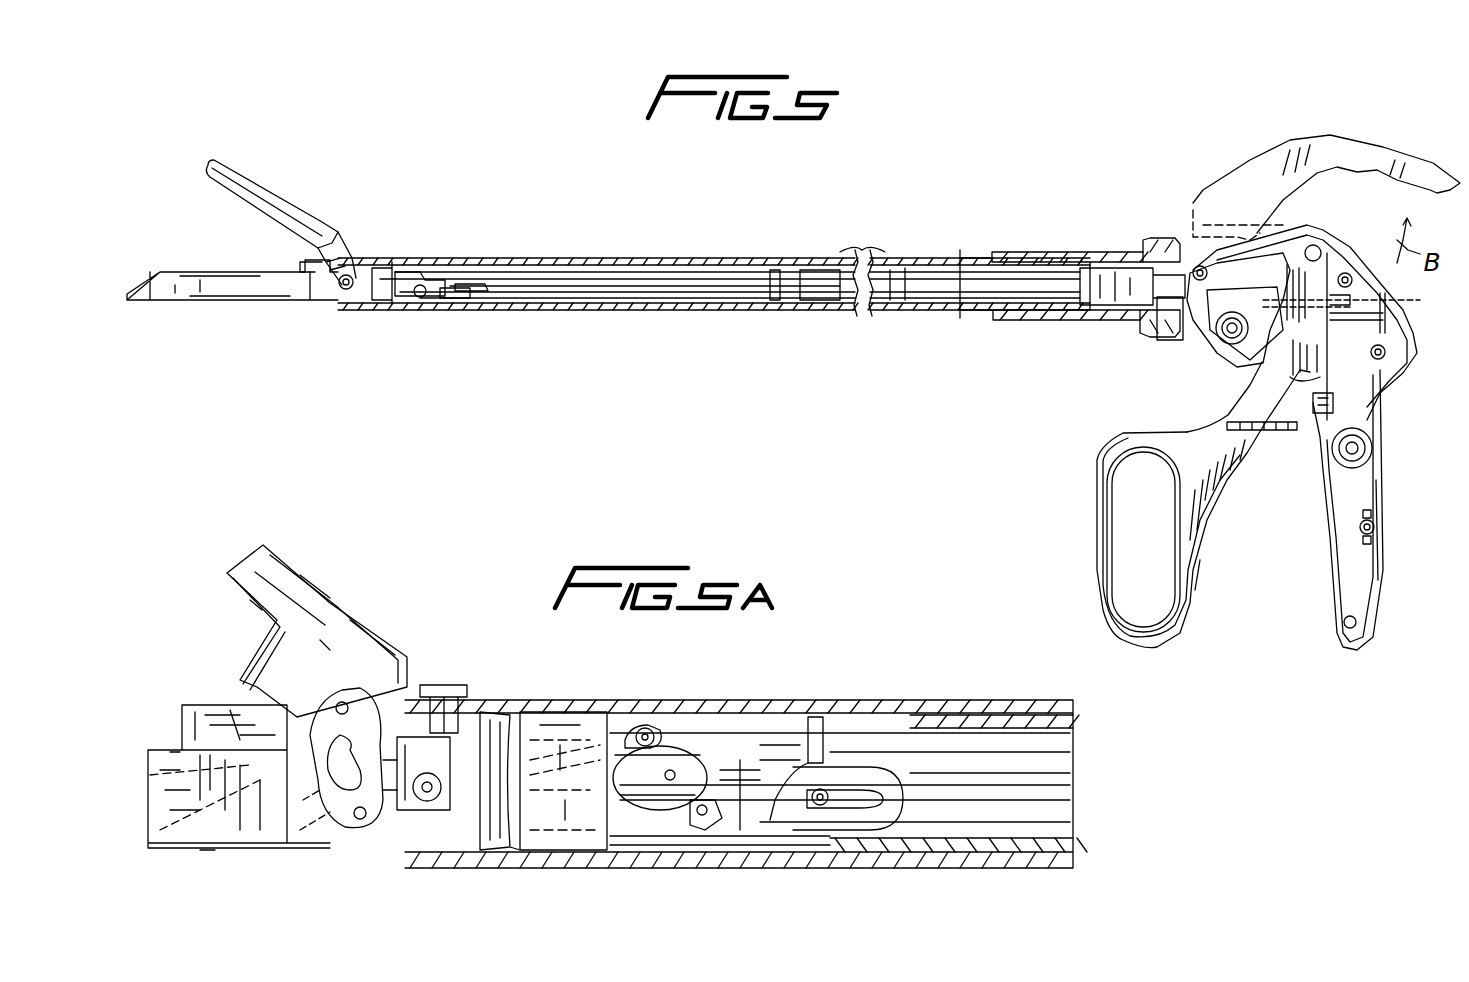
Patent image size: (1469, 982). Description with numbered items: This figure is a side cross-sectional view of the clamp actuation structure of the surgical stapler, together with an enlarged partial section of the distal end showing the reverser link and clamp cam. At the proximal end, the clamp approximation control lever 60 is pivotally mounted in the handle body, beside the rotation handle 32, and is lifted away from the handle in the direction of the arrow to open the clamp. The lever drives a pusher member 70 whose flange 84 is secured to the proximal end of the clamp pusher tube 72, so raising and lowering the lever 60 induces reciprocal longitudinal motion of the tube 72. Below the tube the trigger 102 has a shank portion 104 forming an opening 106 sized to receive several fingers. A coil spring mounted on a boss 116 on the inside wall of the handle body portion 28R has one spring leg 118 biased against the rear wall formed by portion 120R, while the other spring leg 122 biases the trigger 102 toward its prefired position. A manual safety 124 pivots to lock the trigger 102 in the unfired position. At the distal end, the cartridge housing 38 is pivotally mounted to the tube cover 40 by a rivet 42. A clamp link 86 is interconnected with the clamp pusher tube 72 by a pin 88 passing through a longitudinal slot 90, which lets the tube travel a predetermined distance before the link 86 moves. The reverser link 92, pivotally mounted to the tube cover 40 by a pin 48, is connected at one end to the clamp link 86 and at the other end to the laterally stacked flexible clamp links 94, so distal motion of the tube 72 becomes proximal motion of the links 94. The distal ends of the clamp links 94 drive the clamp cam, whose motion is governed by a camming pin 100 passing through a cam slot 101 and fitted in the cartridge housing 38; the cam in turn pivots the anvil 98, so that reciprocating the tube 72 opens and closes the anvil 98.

In FIG. 5, the cartridge housing 38 is at (262, 293).
In FIG. 5A, the cartridge housing 38 is at (180, 810).
In FIG. 5, the anvil 98 is at (280, 203).
In FIG. 5A, the anvil 98 is at (337, 602).
In FIG. 5, the flange 84 is at (1090, 252).
In FIG. 5, the rotation handle 32 is at (1118, 252).
In FIG. 5, the pusher member 70 is at (1097, 295).
In FIG. 5, the clamp approximation control lever 60 is at (1293, 140).
In FIG. 5, the trigger 102 is at (1090, 537).
In FIG. 5, the opening 106 is at (1143, 613).
In FIG. 5, the shank portion 104 is at (1187, 530).
In FIG. 5, the handle body portion 28R is at (1337, 633).
In FIG. 5, the rear wall portion 120R is at (1373, 577).
In FIG. 5, the boss 116 is at (1367, 460).
In FIG. 5, the spring leg 118 is at (1378, 360).
In FIG. 5, the spring leg 122 is at (1333, 408).
In FIG. 5, the manual safety 124 is at (1260, 433).
In FIG. 5A, the clamp pusher tube 72 is at (975, 705).
In FIG. 5A, the camming pin 100 is at (333, 807).
In FIG. 5A, the cam slot 101 is at (303, 790).
In FIG. 5A, the rivet 42 is at (440, 687).
In FIG. 5A, the flexible clamp links 94 is at (553, 700).
In FIG. 5A, the pin 48 is at (670, 775).
In FIG. 5A, the reverser link 92 is at (700, 818).
In FIG. 5A, the tube cover 40 is at (815, 715).
In FIG. 5A, the clamp link 86 is at (893, 810).
In FIG. 5A, the longitudinal slot 90 is at (858, 805).
In FIG. 5A, the pin 88 is at (822, 797).